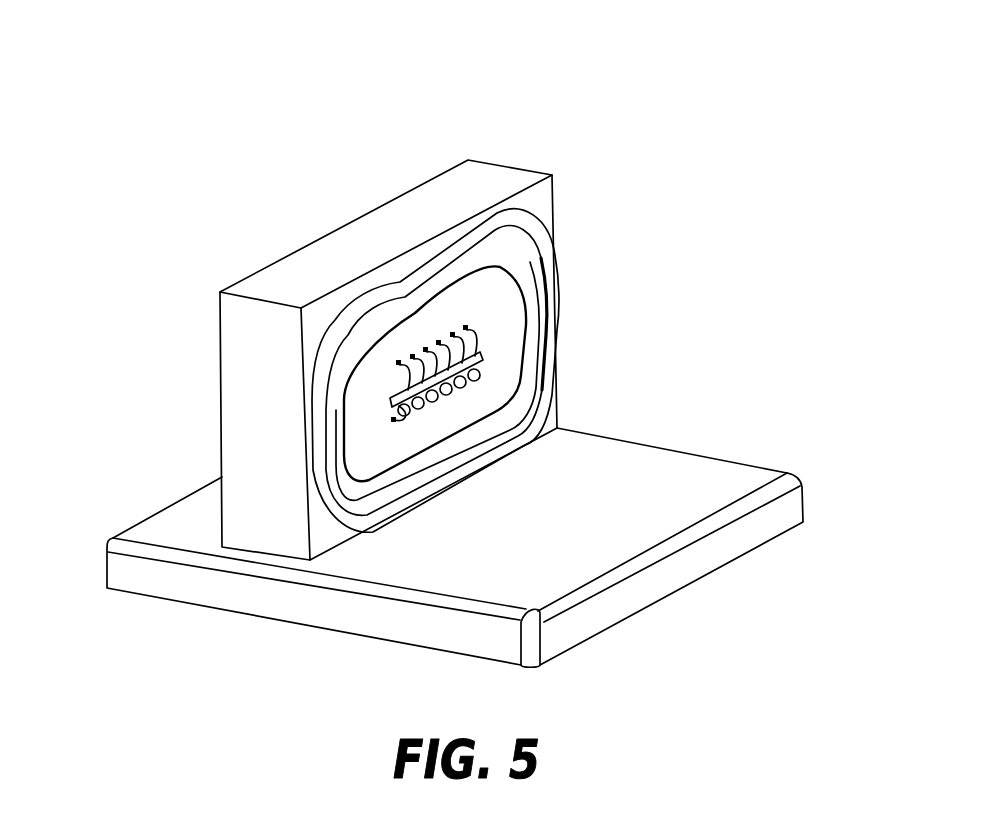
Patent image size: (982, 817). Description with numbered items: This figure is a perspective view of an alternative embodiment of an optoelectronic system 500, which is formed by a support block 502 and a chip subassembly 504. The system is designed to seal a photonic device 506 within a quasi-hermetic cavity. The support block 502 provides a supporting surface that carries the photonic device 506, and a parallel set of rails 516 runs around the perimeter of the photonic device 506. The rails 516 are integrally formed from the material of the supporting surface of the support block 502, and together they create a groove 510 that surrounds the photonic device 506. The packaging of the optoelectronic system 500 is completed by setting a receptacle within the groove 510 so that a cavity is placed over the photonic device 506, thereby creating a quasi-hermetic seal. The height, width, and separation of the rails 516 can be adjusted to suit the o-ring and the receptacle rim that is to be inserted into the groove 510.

The optoelectronic system 500 is at (665, 90).
The support block 502 is at (505, 167).
The chip subassembly 504 is at (98, 535).
The photonic device 506 is at (388, 393).
The groove 510 is at (503, 240).
The rails 516 is at (542, 382).